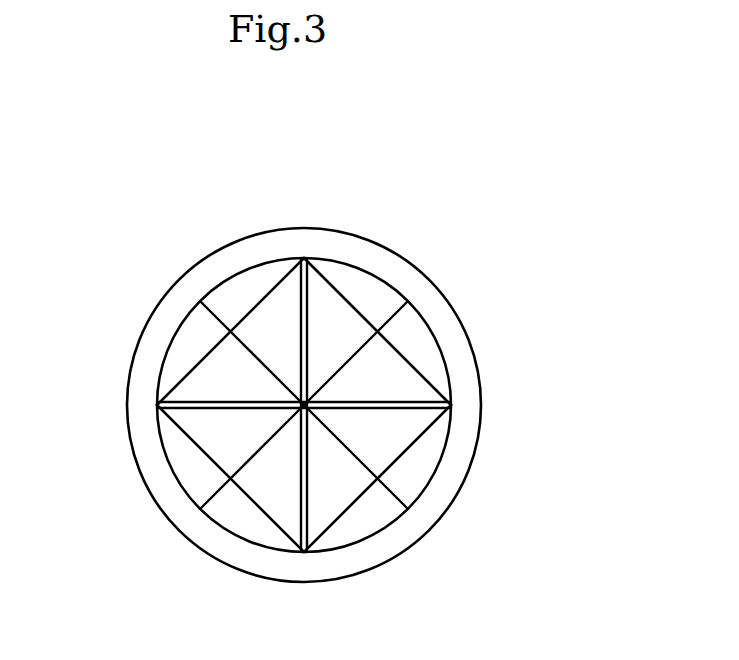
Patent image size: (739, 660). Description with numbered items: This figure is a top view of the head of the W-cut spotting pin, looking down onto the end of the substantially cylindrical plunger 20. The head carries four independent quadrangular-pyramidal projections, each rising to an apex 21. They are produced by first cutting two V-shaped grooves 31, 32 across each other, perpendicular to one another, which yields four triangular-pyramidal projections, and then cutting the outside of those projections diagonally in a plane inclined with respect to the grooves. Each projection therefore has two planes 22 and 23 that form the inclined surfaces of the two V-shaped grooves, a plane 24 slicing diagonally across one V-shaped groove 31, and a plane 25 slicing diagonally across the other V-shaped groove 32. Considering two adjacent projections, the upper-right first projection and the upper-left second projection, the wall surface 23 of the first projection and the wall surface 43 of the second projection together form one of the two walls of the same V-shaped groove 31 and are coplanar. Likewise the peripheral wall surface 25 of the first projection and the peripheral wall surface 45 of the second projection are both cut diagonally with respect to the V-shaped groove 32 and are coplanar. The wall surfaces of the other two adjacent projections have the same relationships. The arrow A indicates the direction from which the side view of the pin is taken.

The plunger 20 is at (228, 548).
The apex 21 is at (223, 340).
The plane 22 is at (320, 307).
The plane 23 is at (385, 387).
The plane 24 is at (427, 360).
The plane 25 is at (377, 293).
The V-shaped groove 31 is at (157, 406).
The V-shaped groove 32 is at (306, 552).
The wall surface 43 is at (223, 380).
The wall surface 45 is at (248, 288).
The arrow A is at (513, 410).